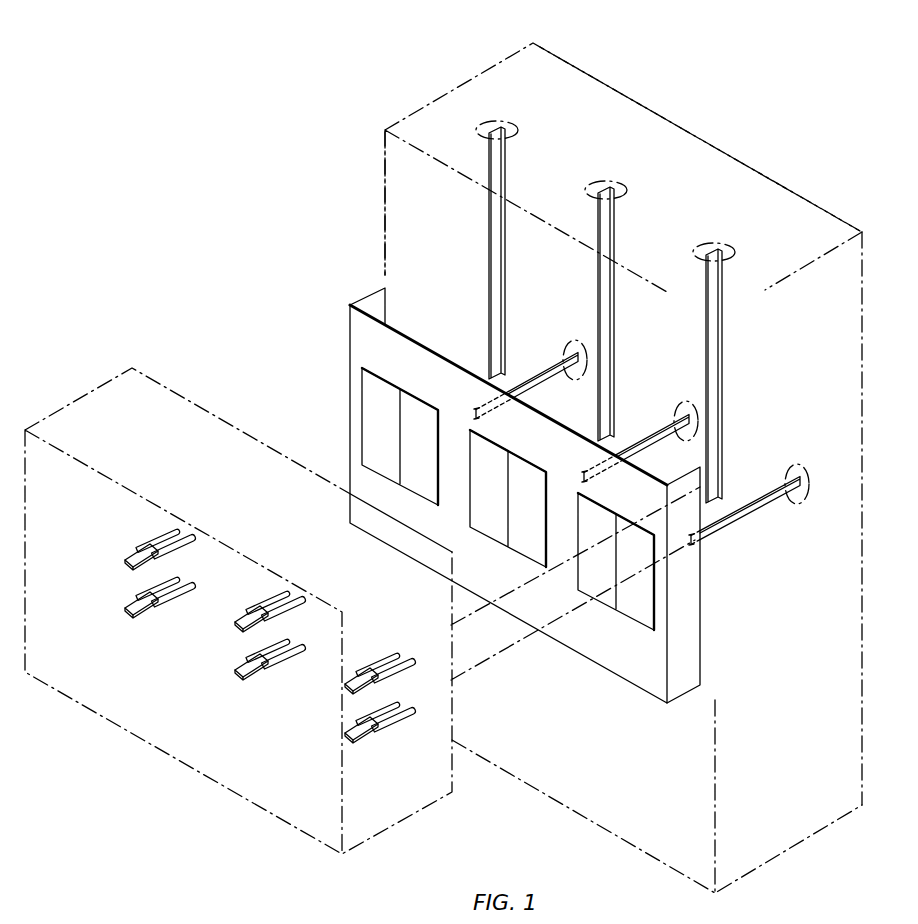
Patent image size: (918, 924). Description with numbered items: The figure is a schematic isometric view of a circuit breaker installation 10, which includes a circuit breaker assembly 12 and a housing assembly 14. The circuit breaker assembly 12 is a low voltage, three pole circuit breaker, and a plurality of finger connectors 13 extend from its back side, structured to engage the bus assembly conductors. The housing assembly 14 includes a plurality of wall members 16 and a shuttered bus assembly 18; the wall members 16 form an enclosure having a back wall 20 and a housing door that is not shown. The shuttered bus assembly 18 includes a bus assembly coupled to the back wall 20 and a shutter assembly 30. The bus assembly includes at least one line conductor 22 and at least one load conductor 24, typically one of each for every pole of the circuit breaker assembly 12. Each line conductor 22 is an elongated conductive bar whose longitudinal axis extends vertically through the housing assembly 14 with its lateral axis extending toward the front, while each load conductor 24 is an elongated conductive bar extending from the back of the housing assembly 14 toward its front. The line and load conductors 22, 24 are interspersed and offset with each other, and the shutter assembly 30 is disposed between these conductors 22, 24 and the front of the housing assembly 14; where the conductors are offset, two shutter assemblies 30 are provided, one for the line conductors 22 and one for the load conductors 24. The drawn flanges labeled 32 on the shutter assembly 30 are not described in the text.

The circuit breaker installation 10 is at (353, 83).
The circuit breaker assembly 12 is at (181, 400).
The finger connectors 13 is at (125, 562).
The housing assembly 14 is at (458, 98).
The wall members 16 is at (390, 170).
The shuttered bus assembly 18 is at (748, 367).
The back wall 20 is at (807, 398).
The line conductor 22 is at (493, 224).
The load conductor 24 is at (553, 378).
The shutter assembly 30 is at (617, 664).
The flange 32 is at (378, 290).